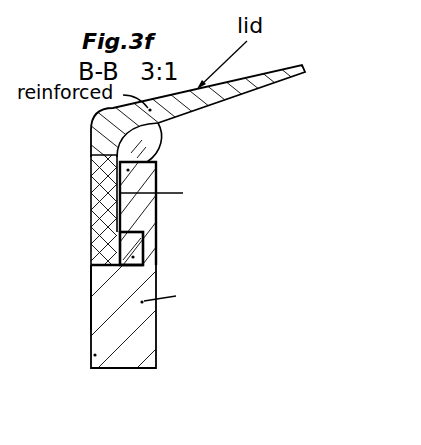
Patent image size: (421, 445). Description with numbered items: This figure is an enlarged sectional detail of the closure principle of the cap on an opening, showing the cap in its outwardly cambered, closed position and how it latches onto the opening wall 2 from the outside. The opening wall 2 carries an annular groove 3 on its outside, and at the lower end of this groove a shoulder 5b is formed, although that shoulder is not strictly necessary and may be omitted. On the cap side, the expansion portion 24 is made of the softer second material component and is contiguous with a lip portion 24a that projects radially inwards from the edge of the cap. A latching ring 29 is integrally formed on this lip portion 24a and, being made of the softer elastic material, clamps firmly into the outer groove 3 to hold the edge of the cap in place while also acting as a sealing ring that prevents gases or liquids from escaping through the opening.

The opening wall 2 is at (92, 355).
The annular groove 3 is at (157, 240).
The shoulder 5b is at (92, 266).
The expansion portion 24 is at (93, 185).
The lip portion 24a is at (92, 293).
The latching ring 29 is at (146, 261).